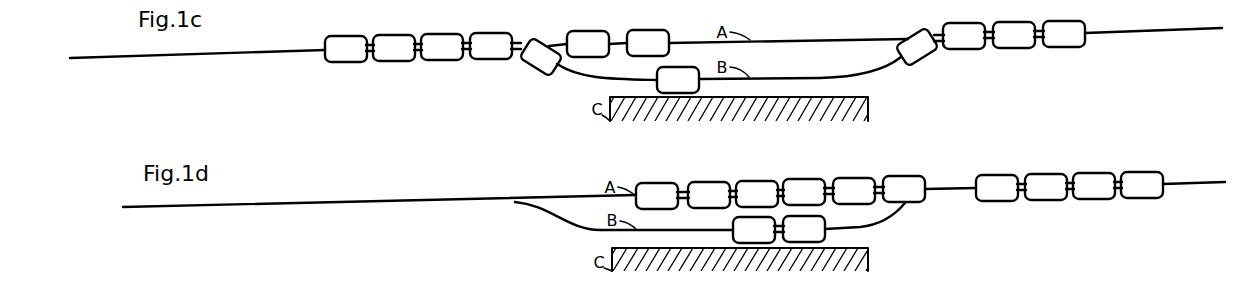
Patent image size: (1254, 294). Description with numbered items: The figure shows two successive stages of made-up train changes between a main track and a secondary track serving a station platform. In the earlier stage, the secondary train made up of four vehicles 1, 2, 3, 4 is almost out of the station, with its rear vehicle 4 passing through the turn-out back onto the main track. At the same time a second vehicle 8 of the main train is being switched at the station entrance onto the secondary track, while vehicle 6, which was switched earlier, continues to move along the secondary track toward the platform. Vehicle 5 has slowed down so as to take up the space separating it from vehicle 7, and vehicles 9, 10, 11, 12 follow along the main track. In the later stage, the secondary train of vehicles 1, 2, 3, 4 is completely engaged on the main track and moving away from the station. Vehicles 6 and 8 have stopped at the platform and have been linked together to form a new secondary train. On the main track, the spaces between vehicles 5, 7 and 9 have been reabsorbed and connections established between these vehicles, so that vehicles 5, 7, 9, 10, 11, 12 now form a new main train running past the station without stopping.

In FIG. 1C, the vehicle 1 is at (1064, 34).
In FIG. 1D, the vehicle 1 is at (1142, 185).
In FIG. 1C, the vehicle 2 is at (1014, 35).
In FIG. 1D, the vehicle 2 is at (1094, 186).
In FIG. 1C, the vehicle 3 is at (964, 36).
In FIG. 1D, the vehicle 3 is at (1046, 187).
In FIG. 1C, the vehicle 4 is at (916, 46).
In FIG. 1D, the vehicle 4 is at (997, 188).
In FIG. 1C, the vehicle 5 is at (648, 43).
In FIG. 1D, the vehicle 5 is at (904, 189).
In FIG. 1C, the vehicle 6 is at (678, 80).
In FIG. 1D, the vehicle 6 is at (804, 229).
In FIG. 1C, the vehicle 7 is at (588, 44).
In FIG. 1D, the vehicle 7 is at (854, 191).
In FIG. 1C, the vehicle 8 is at (540, 56).
In FIG. 1D, the vehicle 8 is at (754, 230).
In FIG. 1C, the vehicle 9 is at (491, 46).
In FIG. 1D, the vehicle 9 is at (804, 192).
In FIG. 1C, the vehicle 10 is at (442, 47).
In FIG. 1D, the vehicle 10 is at (757, 194).
In FIG. 1C, the vehicle 11 is at (394, 48).
In FIG. 1D, the vehicle 11 is at (709, 195).
In FIG. 1C, the vehicle 12 is at (346, 49).
In FIG. 1D, the vehicle 12 is at (657, 196).